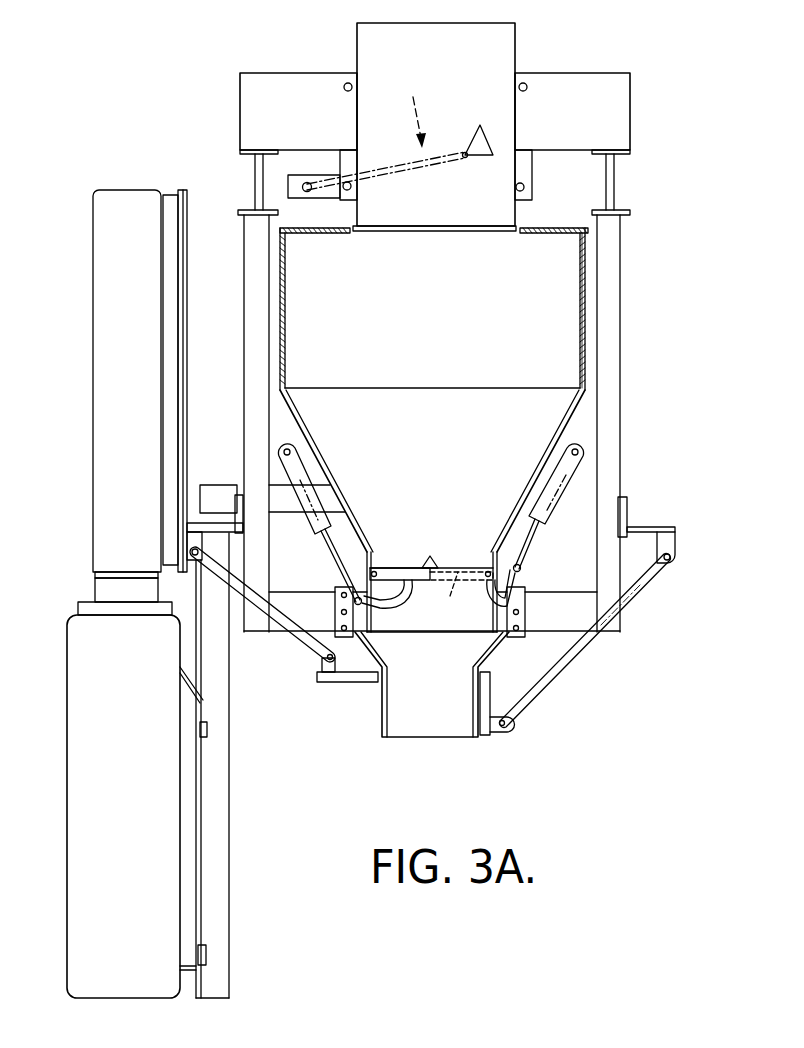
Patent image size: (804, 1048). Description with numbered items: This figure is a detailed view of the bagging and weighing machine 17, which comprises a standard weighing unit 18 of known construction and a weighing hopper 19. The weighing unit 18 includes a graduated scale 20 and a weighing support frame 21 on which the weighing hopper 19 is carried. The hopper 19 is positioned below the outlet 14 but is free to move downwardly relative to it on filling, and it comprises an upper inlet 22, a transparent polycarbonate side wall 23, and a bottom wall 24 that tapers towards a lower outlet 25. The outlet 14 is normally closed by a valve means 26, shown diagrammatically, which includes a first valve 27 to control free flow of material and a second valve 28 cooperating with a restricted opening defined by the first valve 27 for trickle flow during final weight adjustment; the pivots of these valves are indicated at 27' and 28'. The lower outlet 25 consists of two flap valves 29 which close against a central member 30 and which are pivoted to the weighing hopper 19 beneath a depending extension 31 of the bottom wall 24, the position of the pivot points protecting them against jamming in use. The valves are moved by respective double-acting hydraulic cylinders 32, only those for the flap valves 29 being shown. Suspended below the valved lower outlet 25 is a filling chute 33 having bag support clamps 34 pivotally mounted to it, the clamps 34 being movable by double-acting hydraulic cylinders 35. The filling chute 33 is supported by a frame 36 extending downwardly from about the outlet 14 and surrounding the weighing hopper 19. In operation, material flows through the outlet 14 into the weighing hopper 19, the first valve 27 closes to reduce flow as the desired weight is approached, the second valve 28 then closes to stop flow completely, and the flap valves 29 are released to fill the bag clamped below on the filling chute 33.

The outlet 14 is at (485, 55).
The bagging and weighing machine 17 is at (642, 299).
The standard weighing unit 18 is at (76, 584).
The weighing hopper 19 is at (453, 449).
The graduated scale 20 is at (113, 335).
The weighing support frame 21 is at (217, 713).
The upper inlet 22 is at (394, 243).
The transparent polycarbonate side wall 23 is at (582, 278).
The bottom wall 24 is at (538, 468).
The lower outlet 25 is at (466, 557).
The valve means 26 is at (403, 112).
The first valve 27 is at (386, 152).
The arm pivot 27' is at (270, 184).
The second valve 28 is at (470, 116).
The flap pivot 28' is at (444, 187).
The flap valves 29 is at (400, 577).
The central member 30 is at (432, 562).
The depending extension 31 is at (368, 545).
The double-acting hydraulic cylinders 32 is at (318, 528).
The filling chute 33 is at (497, 648).
The bag support clamps 34 is at (360, 677).
The double-acting hydraulic cylinders 35 is at (300, 641).
The frame 36 is at (610, 370).